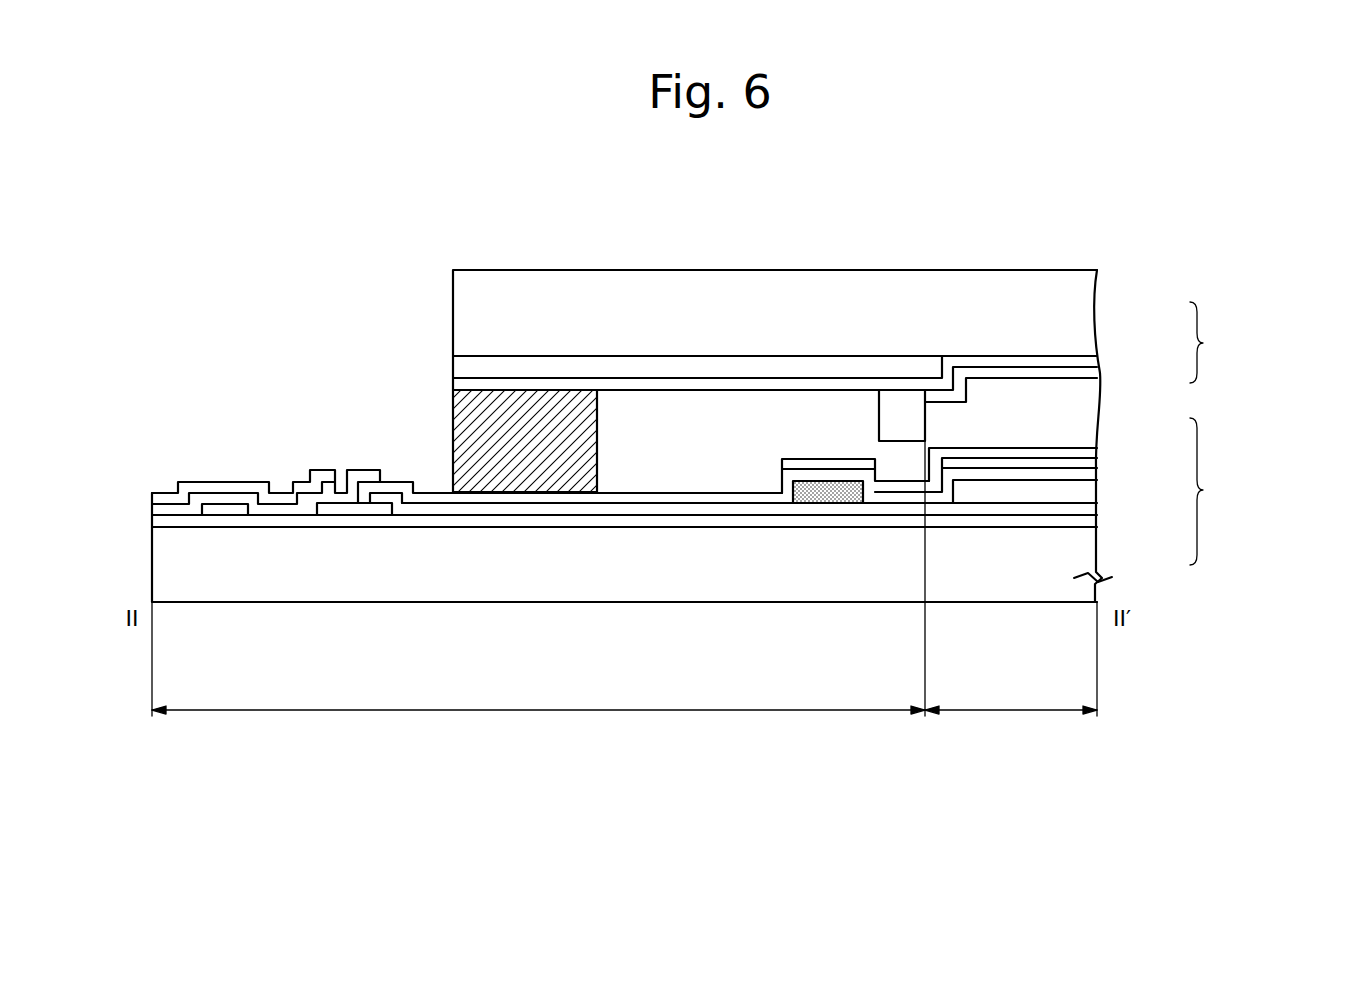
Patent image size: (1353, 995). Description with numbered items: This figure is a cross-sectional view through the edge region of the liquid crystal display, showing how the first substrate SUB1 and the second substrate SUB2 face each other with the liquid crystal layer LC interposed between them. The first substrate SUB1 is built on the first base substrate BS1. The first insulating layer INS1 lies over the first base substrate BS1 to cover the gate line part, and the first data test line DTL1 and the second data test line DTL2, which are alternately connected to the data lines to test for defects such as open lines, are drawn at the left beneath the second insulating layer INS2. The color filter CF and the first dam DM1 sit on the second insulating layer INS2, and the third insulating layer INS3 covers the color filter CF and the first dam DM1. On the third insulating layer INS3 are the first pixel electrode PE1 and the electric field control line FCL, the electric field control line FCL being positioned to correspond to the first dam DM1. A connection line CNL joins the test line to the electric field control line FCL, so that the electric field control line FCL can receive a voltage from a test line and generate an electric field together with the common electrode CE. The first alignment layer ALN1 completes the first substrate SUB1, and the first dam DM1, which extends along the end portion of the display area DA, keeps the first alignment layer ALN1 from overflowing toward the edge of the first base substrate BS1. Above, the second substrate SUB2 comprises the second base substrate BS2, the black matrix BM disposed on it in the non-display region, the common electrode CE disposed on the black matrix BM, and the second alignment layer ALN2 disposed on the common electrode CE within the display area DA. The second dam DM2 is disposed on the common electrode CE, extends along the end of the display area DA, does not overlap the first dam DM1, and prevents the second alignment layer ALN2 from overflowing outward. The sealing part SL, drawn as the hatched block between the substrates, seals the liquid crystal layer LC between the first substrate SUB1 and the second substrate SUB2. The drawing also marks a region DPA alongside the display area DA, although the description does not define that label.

The second base substrate BS2 is at (1083, 314).
The black matrix BM is at (762, 365).
The common electrode CE is at (1100, 366).
The second alignment layer ALN2 is at (1100, 373).
The second dam DM2 is at (905, 400).
The liquid crystal layer LC is at (1085, 400).
The sealing part SL is at (462, 431).
The first base substrate BS1 is at (1085, 553).
The first insulating layer INS1 is at (1085, 520).
The second insulating layer INS2 is at (1085, 509).
The third insulating layer INS3 is at (1085, 475).
The color filter CF is at (1085, 492).
The first pixel electrode PE1 is at (1085, 463).
The first alignment layer ALN1 is at (1085, 452).
The connection line CNL is at (318, 472).
The first data test line DTL1 is at (352, 508).
The second data test line DTL2 is at (222, 510).
The electric field control line FCL is at (812, 463).
The first dam DM1 is at (838, 497).
The first substrate SUB1 is at (1222, 491).
The second substrate SUB2 is at (1222, 342).
The display area DPA is at (538, 589).
The display area DA is at (1011, 669).